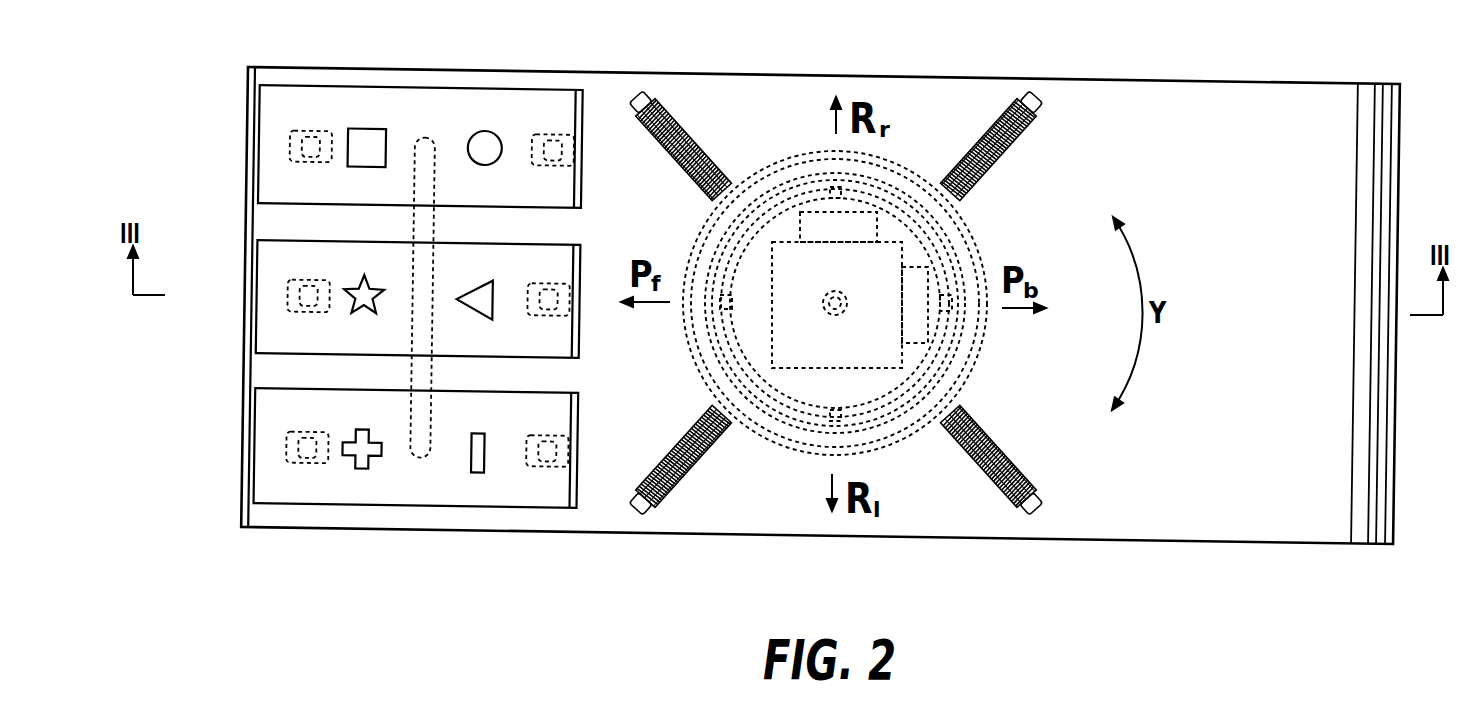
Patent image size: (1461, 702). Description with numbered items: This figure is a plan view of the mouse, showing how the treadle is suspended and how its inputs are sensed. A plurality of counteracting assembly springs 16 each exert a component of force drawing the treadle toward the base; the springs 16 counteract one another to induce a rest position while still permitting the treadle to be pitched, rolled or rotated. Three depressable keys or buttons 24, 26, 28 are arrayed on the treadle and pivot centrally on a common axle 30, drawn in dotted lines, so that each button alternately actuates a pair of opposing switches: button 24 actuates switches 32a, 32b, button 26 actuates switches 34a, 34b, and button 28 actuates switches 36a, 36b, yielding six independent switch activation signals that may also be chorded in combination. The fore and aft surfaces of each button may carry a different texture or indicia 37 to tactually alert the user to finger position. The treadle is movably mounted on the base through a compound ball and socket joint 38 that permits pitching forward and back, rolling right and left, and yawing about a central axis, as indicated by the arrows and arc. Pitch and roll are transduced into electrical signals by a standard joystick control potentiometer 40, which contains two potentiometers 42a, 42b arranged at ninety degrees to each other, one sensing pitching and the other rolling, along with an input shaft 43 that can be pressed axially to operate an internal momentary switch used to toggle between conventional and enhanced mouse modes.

The counteracting assembly springs 16 is at (889, 302).
The depressable key/button 24 is at (383, 448).
The depressable key/button 26 is at (384, 299).
The depressable key/button 28 is at (386, 147).
The common axle 30 is at (425, 232).
The switch 32a is at (249, 433).
The switch 32b is at (543, 501).
The switch 34a is at (251, 282).
The switch 34b is at (579, 254).
The switch 36a is at (252, 132).
The switch 36b is at (558, 90).
The indicia 37 is at (367, 96).
The compound ball and socket joint 38 is at (835, 378).
The joystick control potentiometer 40 is at (832, 194).
The potentiometer 42a is at (862, 129).
The potentiometer 42b is at (1001, 252).
The input shaft 43 is at (793, 400).